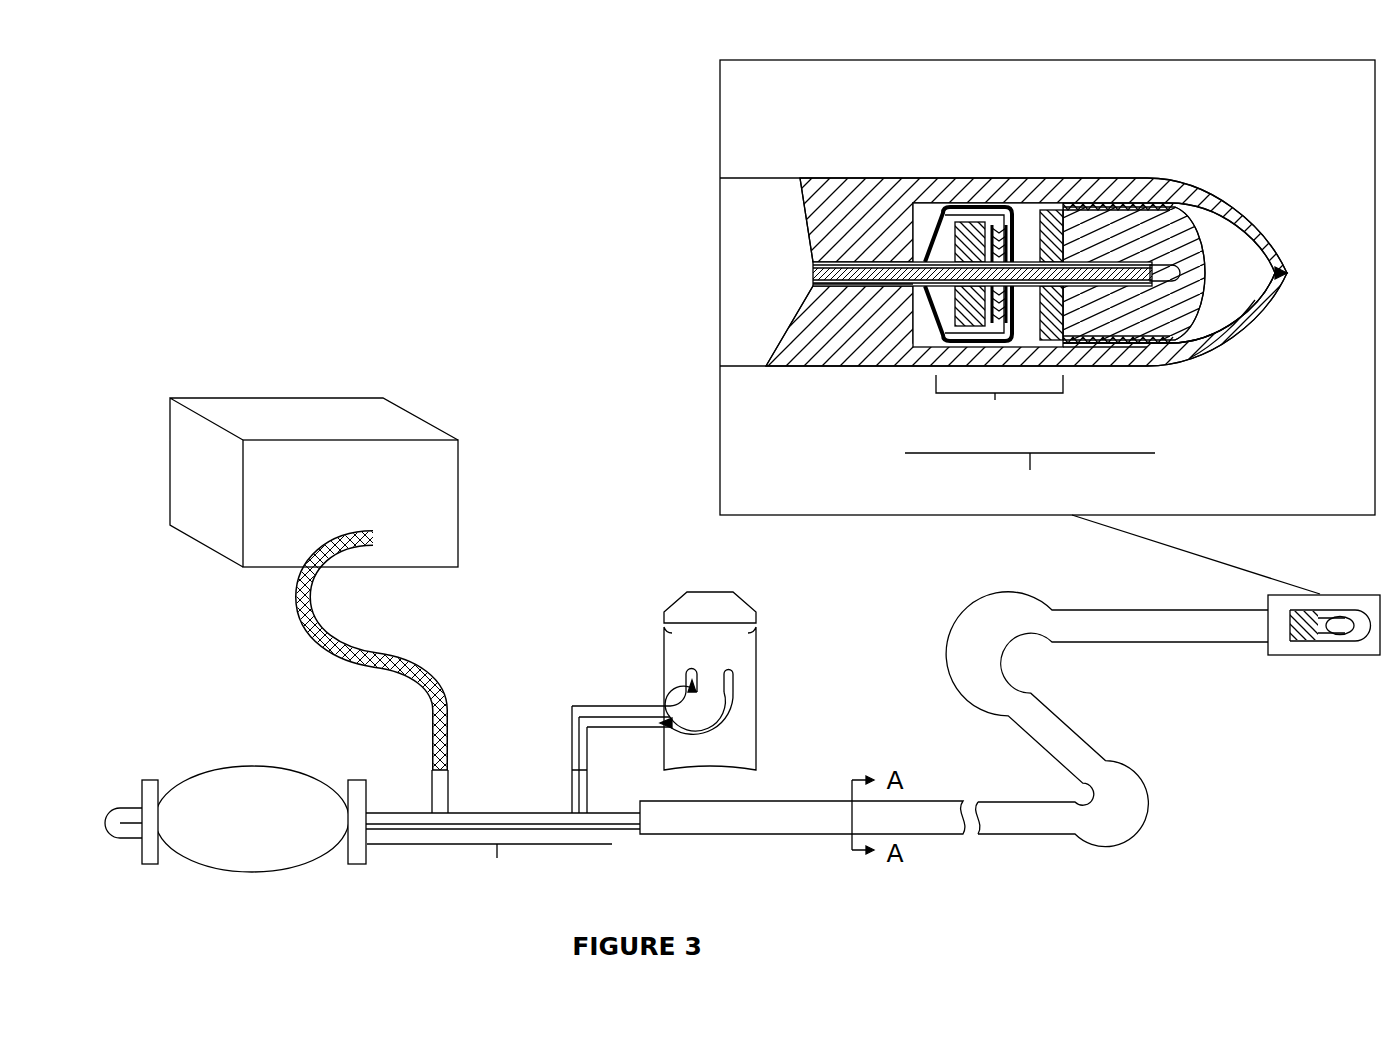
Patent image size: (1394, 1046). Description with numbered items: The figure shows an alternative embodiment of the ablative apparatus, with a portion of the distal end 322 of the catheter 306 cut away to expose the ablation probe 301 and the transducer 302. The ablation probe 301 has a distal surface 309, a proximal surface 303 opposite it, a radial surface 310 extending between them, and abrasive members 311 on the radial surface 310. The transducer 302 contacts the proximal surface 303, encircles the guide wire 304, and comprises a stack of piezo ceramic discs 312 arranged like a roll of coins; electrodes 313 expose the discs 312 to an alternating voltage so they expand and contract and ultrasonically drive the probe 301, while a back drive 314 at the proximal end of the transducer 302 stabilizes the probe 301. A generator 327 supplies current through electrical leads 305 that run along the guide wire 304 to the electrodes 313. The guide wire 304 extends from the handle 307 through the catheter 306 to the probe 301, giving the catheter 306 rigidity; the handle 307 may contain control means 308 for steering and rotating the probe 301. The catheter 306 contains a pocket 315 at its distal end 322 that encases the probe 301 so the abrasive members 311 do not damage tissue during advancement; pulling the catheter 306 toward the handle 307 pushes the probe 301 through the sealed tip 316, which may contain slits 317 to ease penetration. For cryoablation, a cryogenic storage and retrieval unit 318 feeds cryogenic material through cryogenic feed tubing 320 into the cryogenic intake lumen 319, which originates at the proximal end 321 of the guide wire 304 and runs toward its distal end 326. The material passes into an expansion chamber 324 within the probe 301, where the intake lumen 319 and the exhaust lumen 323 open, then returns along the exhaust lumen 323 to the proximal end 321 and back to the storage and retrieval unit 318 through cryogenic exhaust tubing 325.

The ablation probe 301 is at (1173, 273).
The transducer 302 is at (988, 320).
The proximal surface 303 is at (1065, 233).
The guide wire 304 is at (892, 267).
The electrical leads 305 is at (940, 218).
The catheter 306 is at (777, 247).
The handle 307 is at (307, 798).
The control means 308 is at (122, 815).
The distal surface 309 is at (1205, 290).
The radial surface 310 is at (1143, 343).
The abrasive members 311 is at (1100, 343).
The piezo ceramic discs 312 is at (1018, 237).
The electrodes 313 is at (1032, 235).
The back drive 314 is at (968, 242).
The pocket 315 is at (1223, 263).
The sealed tip 316 is at (1275, 267).
The slits 317 is at (1273, 272).
The cryogenic storage and retrieval unit 318 is at (722, 605).
The cryogenic intake lumen 319 is at (850, 280).
The cryogenic feed tubing 320 is at (737, 675).
The proximal end 321 is at (489, 868).
The distal end 322 is at (1318, 655).
The exhaust lumen 323 is at (863, 266).
The expansion chamber 324 is at (1110, 253).
The cryogenic exhaust tubing 325 is at (640, 708).
The distal end 326 is at (1030, 479).
The generator 327 is at (427, 473).